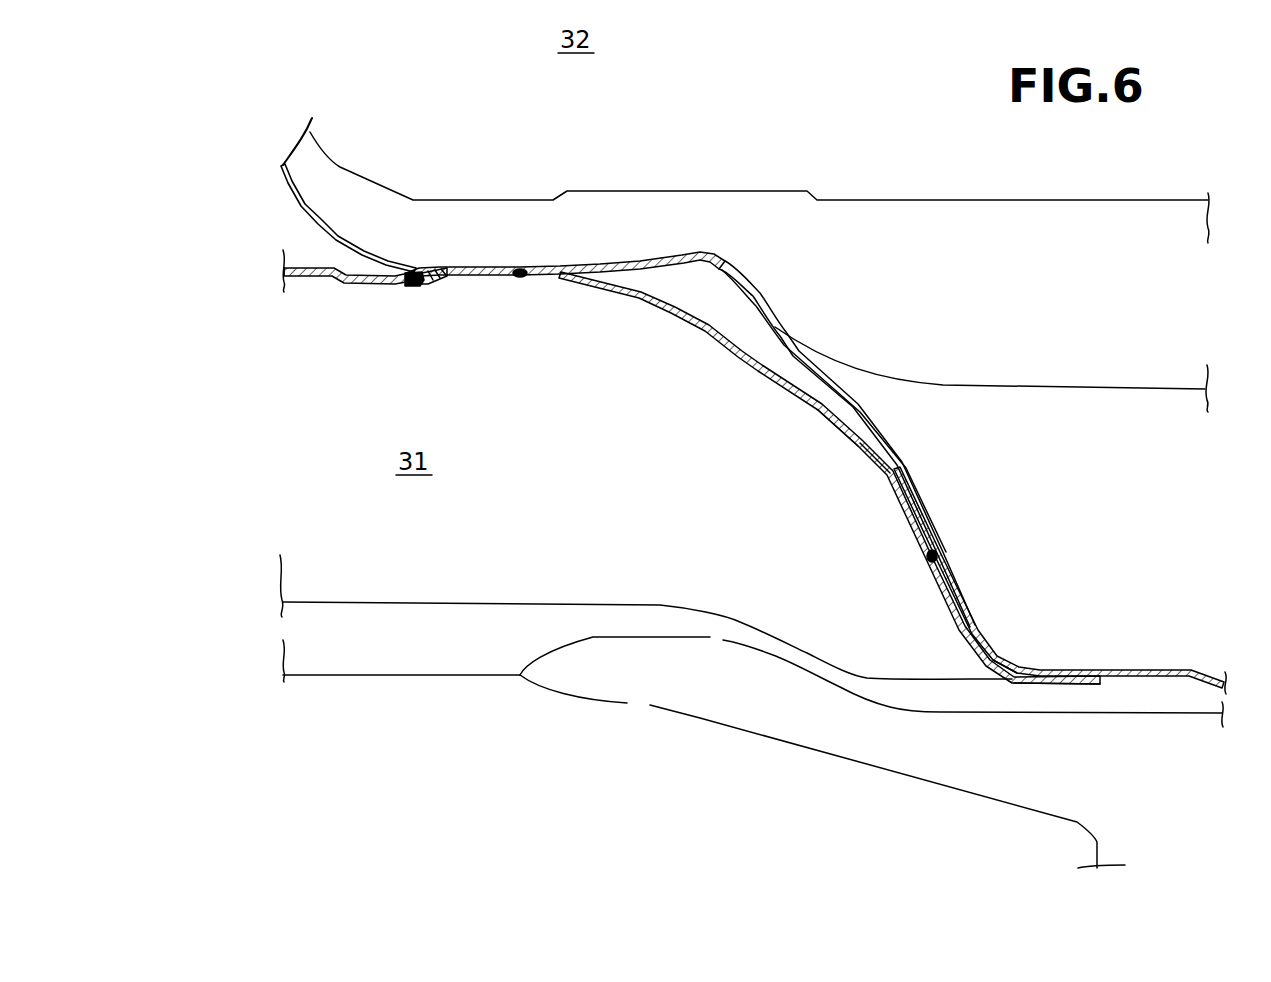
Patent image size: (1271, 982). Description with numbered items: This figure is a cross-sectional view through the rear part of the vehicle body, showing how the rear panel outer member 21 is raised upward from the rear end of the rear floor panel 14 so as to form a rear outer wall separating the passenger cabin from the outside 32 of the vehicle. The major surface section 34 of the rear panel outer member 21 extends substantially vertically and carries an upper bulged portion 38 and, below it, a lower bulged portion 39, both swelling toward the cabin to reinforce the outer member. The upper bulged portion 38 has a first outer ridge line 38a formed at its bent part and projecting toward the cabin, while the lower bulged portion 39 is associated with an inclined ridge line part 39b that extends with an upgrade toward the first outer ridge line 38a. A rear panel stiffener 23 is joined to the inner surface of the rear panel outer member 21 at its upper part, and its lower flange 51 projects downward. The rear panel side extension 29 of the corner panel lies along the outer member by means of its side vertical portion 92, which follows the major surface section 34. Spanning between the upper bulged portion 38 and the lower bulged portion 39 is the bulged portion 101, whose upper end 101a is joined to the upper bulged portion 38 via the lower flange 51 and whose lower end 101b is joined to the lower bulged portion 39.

The rear floor panel 14 is at (512, 483).
The rear panel outer member 21 is at (686, 252).
The rear panel stiffener 23 is at (302, 277).
The rear panel side extension 29 is at (855, 445).
The outside 32 is at (746, 265).
The major surface section 34 is at (770, 317).
The upper bulged portion 38 is at (487, 252).
The first outer ridge line 38a is at (386, 258).
The lower bulged portion 39 is at (985, 650).
The inclined ridge line part 39b is at (990, 675).
The lower flange 51 is at (415, 288).
The side vertical portion 92 is at (805, 406).
The bulged portion 101 is at (758, 370).
The upper end 101a is at (432, 288).
The lower end 101b is at (1066, 684).